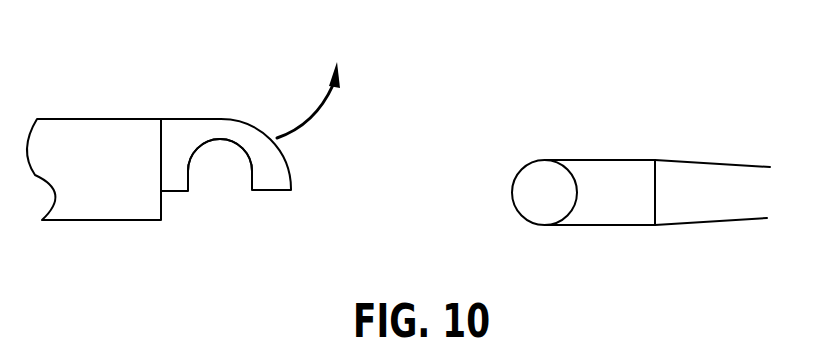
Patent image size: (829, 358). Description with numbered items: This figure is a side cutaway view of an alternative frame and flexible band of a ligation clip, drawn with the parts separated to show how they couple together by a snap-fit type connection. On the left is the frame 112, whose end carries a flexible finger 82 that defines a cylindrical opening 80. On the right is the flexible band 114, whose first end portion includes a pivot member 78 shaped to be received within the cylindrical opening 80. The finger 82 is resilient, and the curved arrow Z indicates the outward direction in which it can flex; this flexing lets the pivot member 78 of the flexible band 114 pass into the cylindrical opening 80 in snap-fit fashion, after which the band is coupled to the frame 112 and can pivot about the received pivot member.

The frame 112 is at (135, 221).
The flexible finger 82 is at (222, 117).
The cylindrical opening 80 is at (222, 150).
The arrow Z is at (317, 113).
The pivot member 78 is at (542, 202).
The flexible band 114 is at (633, 226).